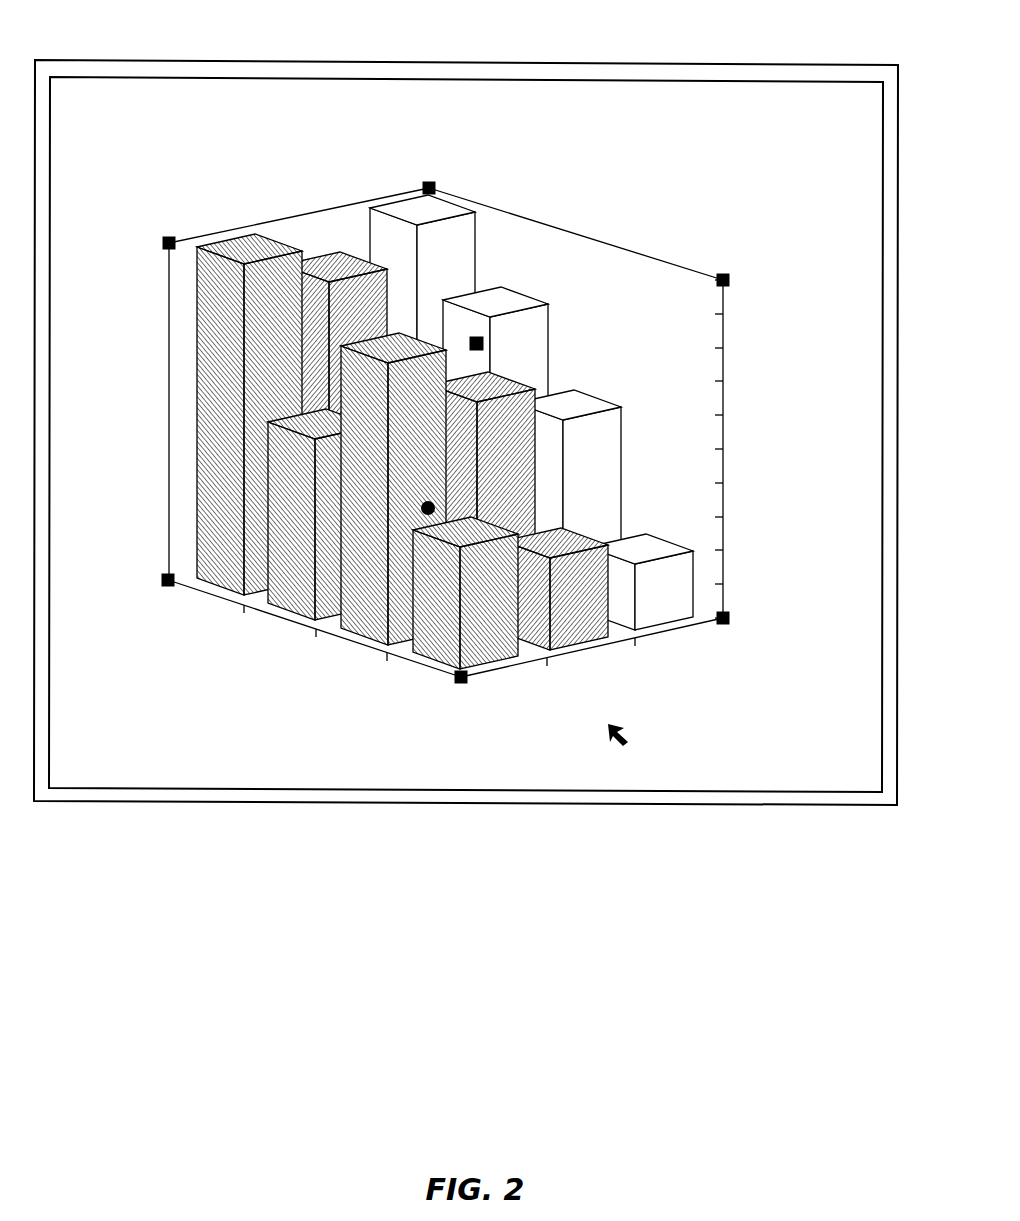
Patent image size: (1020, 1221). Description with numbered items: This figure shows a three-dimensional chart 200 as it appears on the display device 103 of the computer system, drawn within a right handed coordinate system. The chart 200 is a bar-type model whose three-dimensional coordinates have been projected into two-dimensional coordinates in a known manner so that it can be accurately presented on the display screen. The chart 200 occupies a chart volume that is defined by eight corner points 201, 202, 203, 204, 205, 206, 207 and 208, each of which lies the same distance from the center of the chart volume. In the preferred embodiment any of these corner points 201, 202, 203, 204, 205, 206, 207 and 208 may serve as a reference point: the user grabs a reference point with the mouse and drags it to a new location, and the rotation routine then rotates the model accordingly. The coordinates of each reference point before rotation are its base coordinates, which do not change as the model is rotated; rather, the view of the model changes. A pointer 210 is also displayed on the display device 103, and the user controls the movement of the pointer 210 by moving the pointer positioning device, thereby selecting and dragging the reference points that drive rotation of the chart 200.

The display device 103 is at (764, 108).
The three-dimensional chart 200 is at (128, 262).
The corner point 201 is at (162, 581).
The corner point 202 is at (463, 684).
The corner point 203 is at (730, 624).
The corner point 204 is at (398, 512).
The corner point 205 is at (171, 236).
The corner point 206 is at (483, 336).
The corner point 207 is at (727, 273).
The corner point 208 is at (430, 181).
The pointer 210 is at (633, 727).